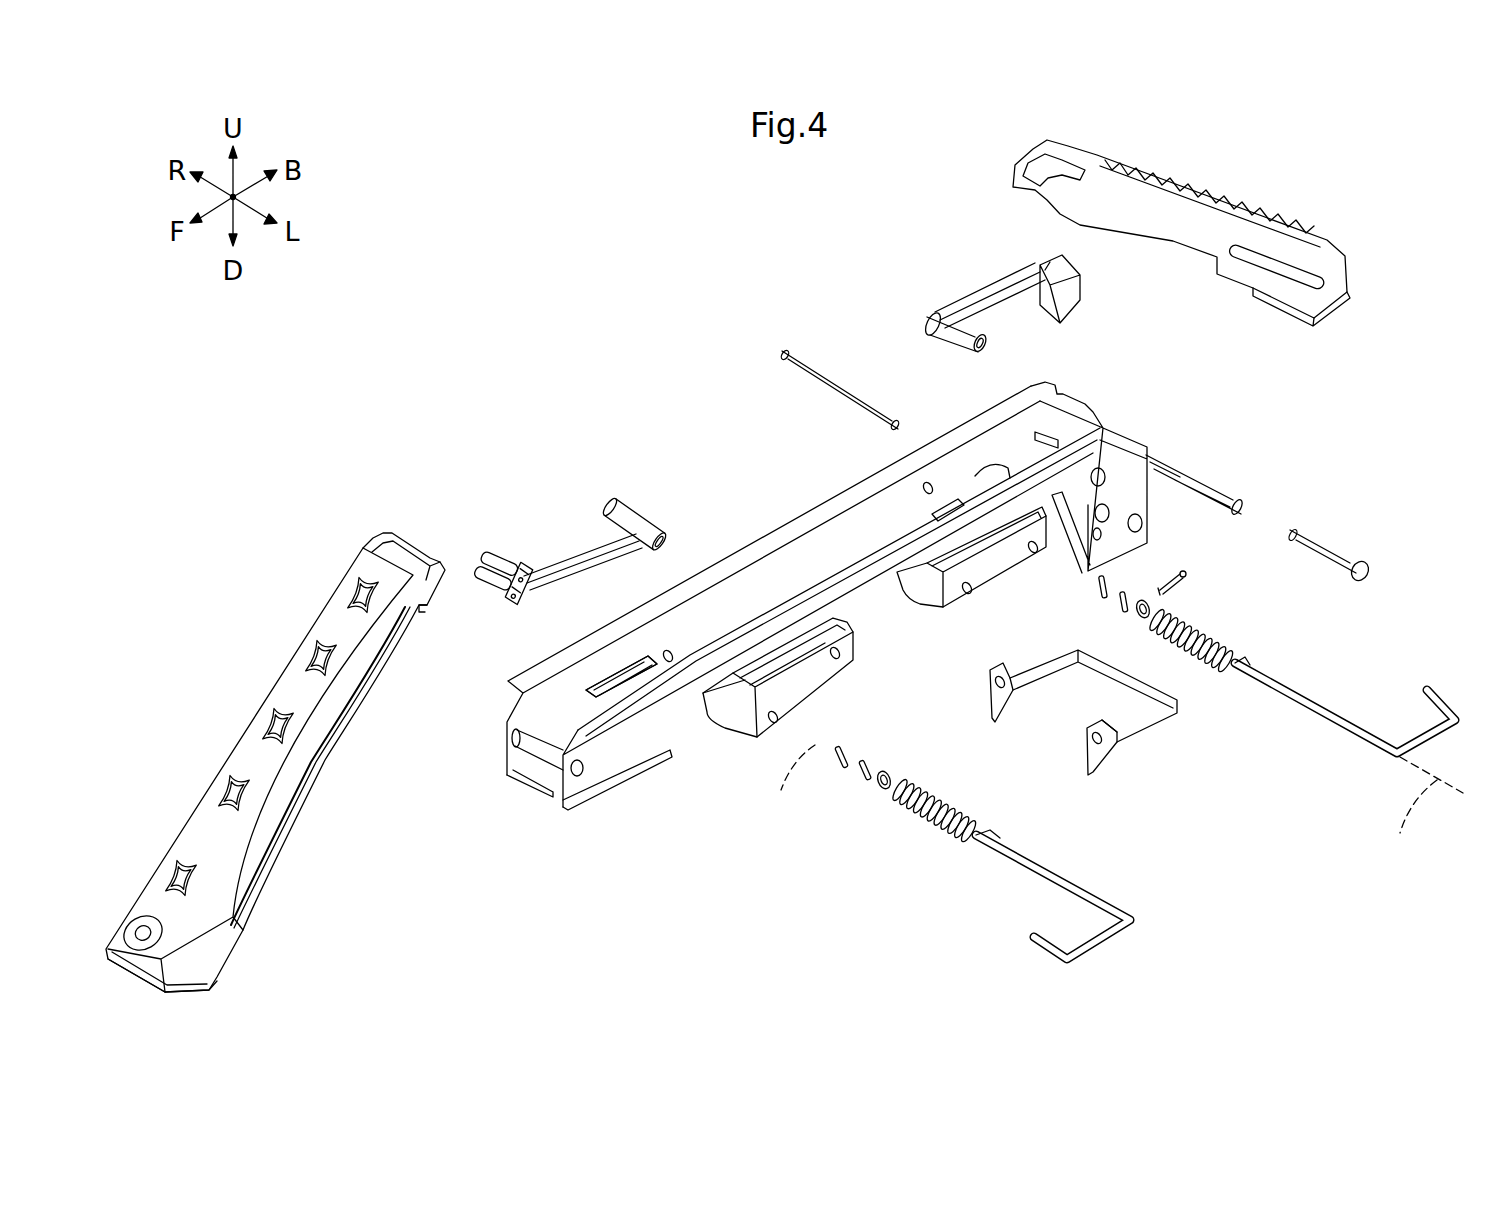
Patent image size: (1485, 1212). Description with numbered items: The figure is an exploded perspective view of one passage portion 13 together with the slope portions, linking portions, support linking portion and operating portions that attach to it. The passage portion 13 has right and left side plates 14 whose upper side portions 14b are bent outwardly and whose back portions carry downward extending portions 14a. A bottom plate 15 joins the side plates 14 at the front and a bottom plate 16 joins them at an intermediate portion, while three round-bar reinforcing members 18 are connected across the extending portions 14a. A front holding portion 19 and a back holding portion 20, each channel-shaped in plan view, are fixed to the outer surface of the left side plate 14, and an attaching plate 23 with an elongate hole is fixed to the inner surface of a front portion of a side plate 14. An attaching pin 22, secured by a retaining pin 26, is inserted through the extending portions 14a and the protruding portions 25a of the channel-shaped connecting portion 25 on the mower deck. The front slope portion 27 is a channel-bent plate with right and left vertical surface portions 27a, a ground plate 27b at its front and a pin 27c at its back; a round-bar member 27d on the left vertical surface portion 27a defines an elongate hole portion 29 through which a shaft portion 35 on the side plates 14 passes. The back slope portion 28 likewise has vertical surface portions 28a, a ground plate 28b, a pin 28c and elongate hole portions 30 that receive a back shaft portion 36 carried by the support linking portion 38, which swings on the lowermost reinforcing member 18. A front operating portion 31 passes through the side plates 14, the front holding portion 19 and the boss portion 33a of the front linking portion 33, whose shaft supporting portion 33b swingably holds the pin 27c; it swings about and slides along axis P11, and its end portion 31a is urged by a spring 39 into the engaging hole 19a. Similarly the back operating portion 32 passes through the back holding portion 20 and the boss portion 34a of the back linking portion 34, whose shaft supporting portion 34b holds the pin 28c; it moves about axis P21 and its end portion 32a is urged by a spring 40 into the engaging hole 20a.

The passage portion 13 is at (838, 599).
The side plate 14 is at (698, 621).
The extending portion 14a is at (1073, 425).
The upper side portion 14b is at (745, 563).
The bottom plate 15 is at (622, 790).
The bottom plate 16 is at (863, 553).
The reinforcing member 18 is at (1142, 523).
The front holding portion 19 is at (828, 682).
The engaging hole 19a is at (846, 662).
The back holding portion 20 is at (983, 579).
The engaging hole 20a is at (970, 588).
The attaching pin 22 is at (843, 381).
The attaching plate 23 is at (613, 670).
The connecting portion 25 is at (1114, 730).
The protruding portion 25a is at (1018, 674).
The retaining pin 26 is at (1185, 570).
The front slope portion 27 is at (233, 750).
The vertical surface portion 27a is at (244, 868).
The ground plate 27b is at (193, 994).
The pin 27c is at (410, 560).
The round-bar member 27d is at (320, 759).
The back slope portion 28 is at (1162, 258).
The vertical surface portion 28a is at (1160, 212).
The ground plate 28b is at (1330, 312).
The pin 28c is at (1057, 182).
The elongate hole portion 29 is at (404, 625).
The elongate hole portion 30 is at (1302, 277).
The front operating portion 31 is at (1053, 927).
The end portion 31a is at (1038, 957).
The back operating portion 32 is at (1345, 684).
The end portion 32a is at (1438, 692).
The front linking portion 33 is at (565, 556).
The boss portion 33a is at (615, 508).
The shaft supporting portion 33b is at (515, 556).
The back linking portion 34 is at (992, 290).
The boss portion 34a is at (930, 318).
The shaft supporting portion 34b is at (1080, 305).
The shaft portion 35 is at (551, 760).
The back shaft portion 36 is at (1337, 545).
The support linking portion 38 is at (1185, 470).
The spring 39 is at (929, 825).
The spring 40 is at (1202, 627).
The axis P11 is at (824, 789).
The axis P21 is at (1419, 812).